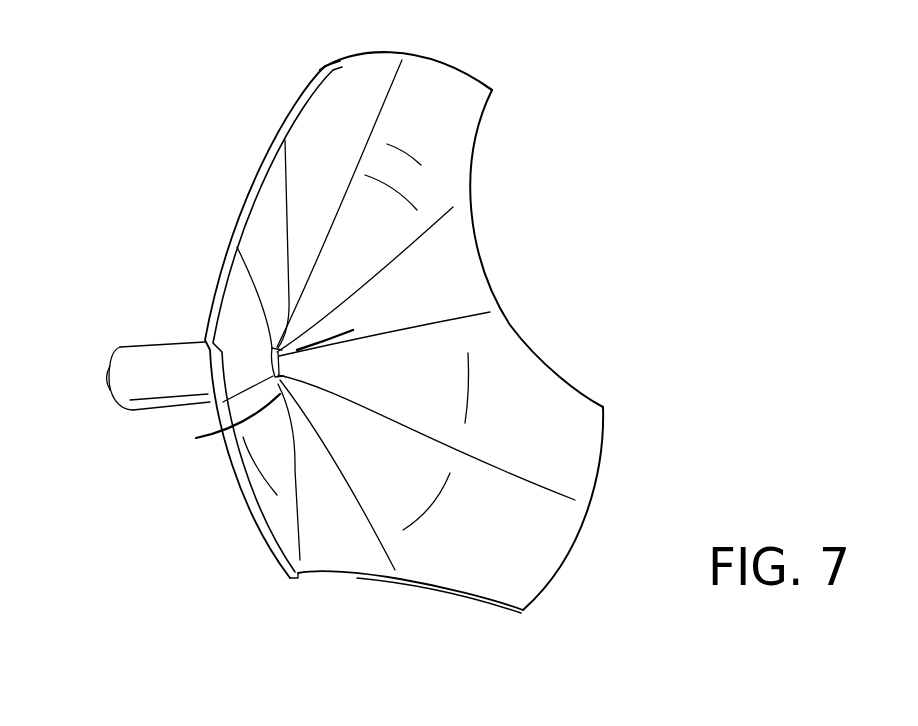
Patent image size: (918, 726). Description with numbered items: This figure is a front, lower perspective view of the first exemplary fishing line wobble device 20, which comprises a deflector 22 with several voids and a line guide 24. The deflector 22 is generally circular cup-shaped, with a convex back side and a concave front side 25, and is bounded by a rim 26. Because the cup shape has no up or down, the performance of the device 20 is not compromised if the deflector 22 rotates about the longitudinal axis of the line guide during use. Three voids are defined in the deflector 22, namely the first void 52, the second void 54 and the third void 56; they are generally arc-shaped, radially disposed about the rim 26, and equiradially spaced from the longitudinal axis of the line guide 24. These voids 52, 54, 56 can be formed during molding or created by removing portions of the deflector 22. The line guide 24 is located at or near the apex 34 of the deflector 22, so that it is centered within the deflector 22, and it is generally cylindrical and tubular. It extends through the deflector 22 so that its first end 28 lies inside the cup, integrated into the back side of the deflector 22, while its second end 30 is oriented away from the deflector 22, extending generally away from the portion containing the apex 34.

The fishing line wobble device 20 is at (738, 150).
The deflector 22 is at (464, 331).
The line guide 24 is at (114, 356).
The front side 25 is at (429, 390).
The rim 26 is at (398, 353).
The first end 28 is at (221, 422).
The second end 30 is at (107, 387).
The apex 34 is at (341, 330).
The first void 52 is at (202, 228).
The second void 54 is at (367, 604).
The third void 56 is at (526, 269).